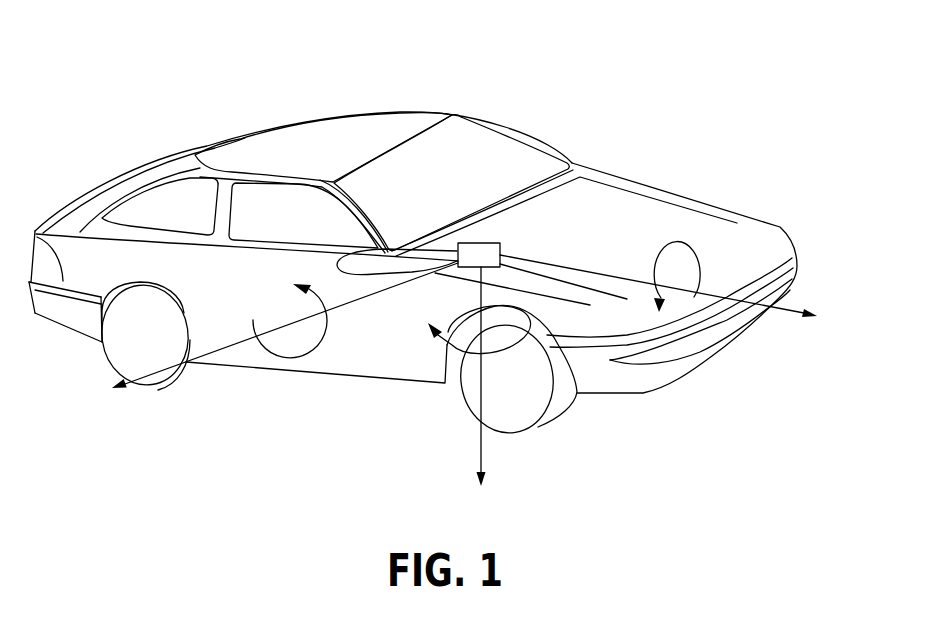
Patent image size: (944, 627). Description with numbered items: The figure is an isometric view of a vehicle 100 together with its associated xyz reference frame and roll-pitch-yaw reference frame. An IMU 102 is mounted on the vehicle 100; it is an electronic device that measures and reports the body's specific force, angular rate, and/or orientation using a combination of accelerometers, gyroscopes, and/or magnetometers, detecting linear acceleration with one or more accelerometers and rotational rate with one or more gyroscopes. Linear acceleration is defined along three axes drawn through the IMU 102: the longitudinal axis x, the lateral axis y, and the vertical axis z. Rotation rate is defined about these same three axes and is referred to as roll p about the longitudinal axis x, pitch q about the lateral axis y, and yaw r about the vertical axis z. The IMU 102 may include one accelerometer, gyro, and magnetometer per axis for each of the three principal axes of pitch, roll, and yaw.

The vehicle 100 is at (158, 88).
The IMU 102 is at (487, 243).
The longitudinal axis x is at (682, 315).
The lateral axis y is at (277, 334).
The vertical axis z is at (523, 389).
The roll p is at (653, 267).
The pitch q is at (270, 311).
The yaw r is at (455, 332).